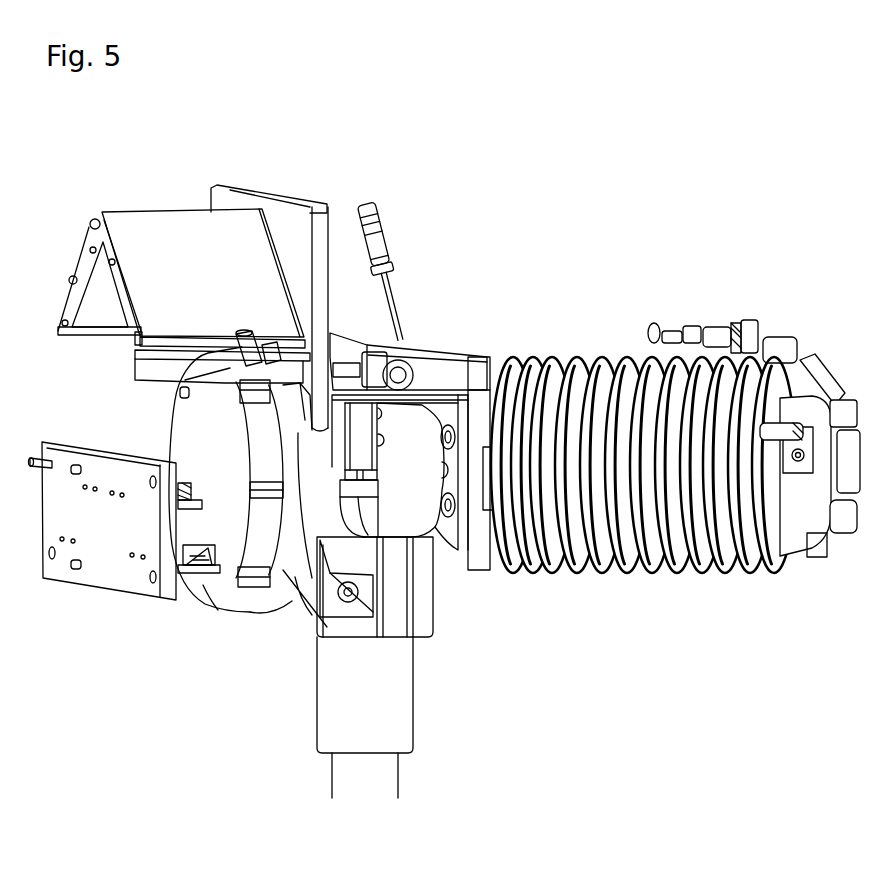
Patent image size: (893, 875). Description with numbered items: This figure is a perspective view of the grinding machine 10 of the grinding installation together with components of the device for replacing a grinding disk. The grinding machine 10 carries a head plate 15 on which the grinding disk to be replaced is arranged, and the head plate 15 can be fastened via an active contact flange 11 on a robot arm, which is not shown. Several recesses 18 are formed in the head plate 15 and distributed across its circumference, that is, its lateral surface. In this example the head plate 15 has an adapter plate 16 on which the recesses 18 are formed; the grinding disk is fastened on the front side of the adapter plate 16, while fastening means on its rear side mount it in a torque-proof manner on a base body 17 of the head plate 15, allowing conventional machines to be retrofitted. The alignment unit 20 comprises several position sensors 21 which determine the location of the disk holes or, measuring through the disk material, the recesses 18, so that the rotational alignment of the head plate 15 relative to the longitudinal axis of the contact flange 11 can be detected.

The grinding machine 10 is at (421, 543).
The contact flange 11 is at (643, 573).
The head plate 15 is at (248, 628).
The adapter plate 16 is at (233, 613).
The base body 17 is at (300, 573).
The recess 18 is at (213, 603).
The alignment unit 20 is at (298, 193).
The position sensor 21 is at (187, 582).